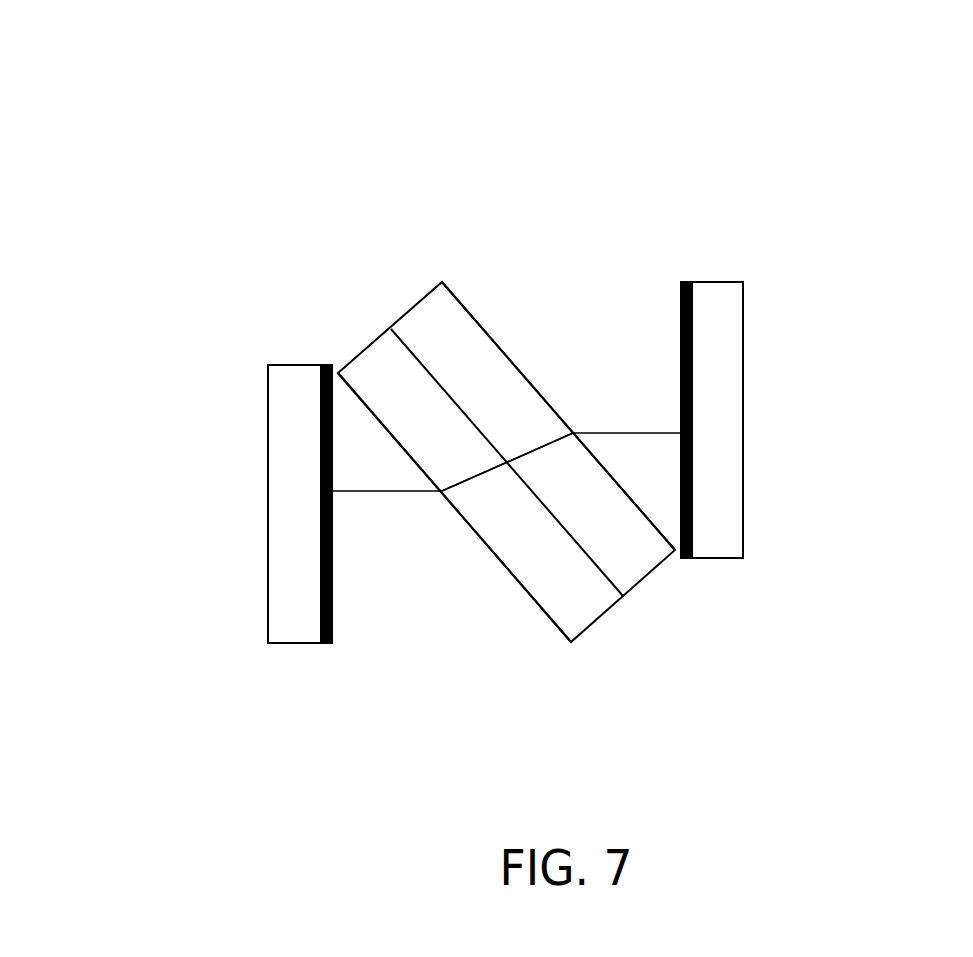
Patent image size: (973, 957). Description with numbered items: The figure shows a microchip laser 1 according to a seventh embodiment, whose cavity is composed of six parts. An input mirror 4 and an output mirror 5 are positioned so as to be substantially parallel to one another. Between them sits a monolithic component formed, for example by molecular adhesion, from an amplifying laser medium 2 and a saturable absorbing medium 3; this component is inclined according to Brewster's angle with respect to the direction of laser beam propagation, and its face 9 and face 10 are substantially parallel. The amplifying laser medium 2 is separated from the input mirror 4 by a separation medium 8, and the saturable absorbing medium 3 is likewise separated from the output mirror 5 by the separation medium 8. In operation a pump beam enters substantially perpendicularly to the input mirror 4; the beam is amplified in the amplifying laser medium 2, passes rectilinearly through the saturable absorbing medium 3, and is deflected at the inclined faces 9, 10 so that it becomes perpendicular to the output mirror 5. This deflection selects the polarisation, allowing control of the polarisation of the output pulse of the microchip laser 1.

The microchip laser 1 is at (186, 224).
The amplifying laser medium 2 is at (455, 458).
The saturable absorbing medium 3 is at (480, 342).
The input mirror 4 is at (318, 609).
The output mirror 5 is at (694, 461).
The separation medium 8 is at (443, 560).
The face 9 is at (547, 615).
The face 10 is at (536, 384).